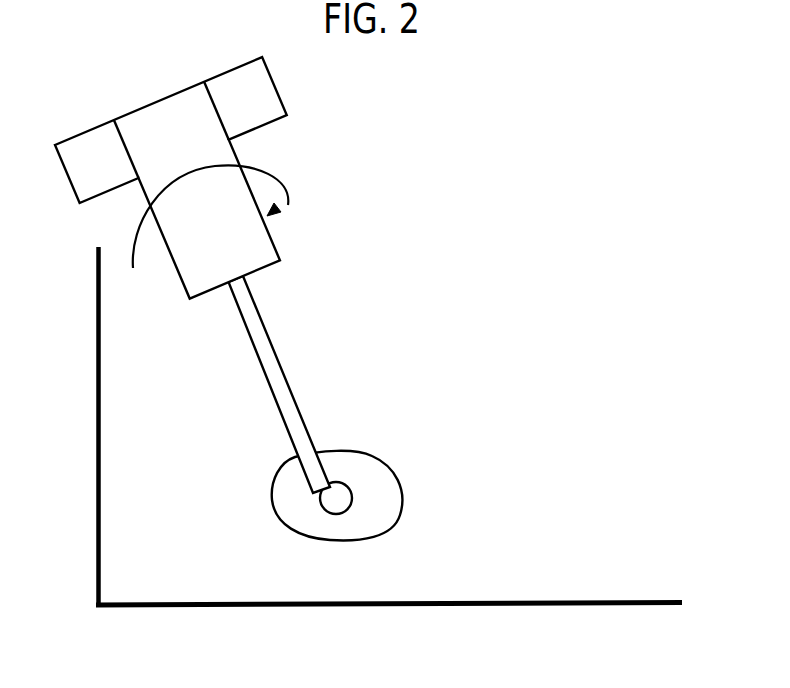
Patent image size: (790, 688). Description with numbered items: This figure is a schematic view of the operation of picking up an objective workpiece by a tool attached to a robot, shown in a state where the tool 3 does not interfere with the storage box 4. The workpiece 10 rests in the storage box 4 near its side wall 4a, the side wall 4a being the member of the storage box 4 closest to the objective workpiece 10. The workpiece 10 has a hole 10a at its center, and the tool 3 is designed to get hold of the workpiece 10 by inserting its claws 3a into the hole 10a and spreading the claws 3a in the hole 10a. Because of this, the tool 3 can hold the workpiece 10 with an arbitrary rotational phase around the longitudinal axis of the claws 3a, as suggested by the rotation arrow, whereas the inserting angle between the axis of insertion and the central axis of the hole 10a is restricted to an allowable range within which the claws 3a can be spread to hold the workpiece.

The tool 3 is at (272, 252).
The claws 3a is at (288, 380).
The workpiece 10 is at (372, 460).
The hole 10a is at (347, 507).
The storage box 4 is at (273, 608).
The side wall 4a is at (96, 432).